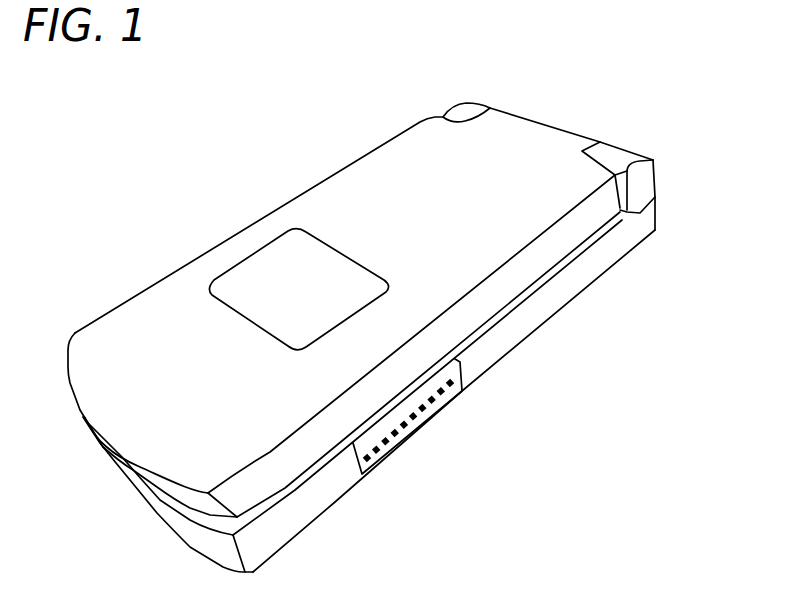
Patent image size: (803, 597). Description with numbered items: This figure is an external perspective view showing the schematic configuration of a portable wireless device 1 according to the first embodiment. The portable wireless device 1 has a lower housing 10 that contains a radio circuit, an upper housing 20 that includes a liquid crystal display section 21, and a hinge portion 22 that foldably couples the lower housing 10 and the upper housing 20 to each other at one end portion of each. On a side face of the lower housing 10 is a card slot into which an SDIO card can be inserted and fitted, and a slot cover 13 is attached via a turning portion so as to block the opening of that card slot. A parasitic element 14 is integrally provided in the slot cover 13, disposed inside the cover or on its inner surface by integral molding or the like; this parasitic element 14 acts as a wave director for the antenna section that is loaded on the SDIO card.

The portable wireless device 1 is at (137, 106).
The lower housing 10 is at (550, 318).
The slot cover 13 is at (390, 455).
The parasitic element 14 is at (433, 408).
The upper housing 20 is at (309, 190).
The liquid crystal display section 21 is at (250, 258).
The hinge portion 22 is at (660, 175).